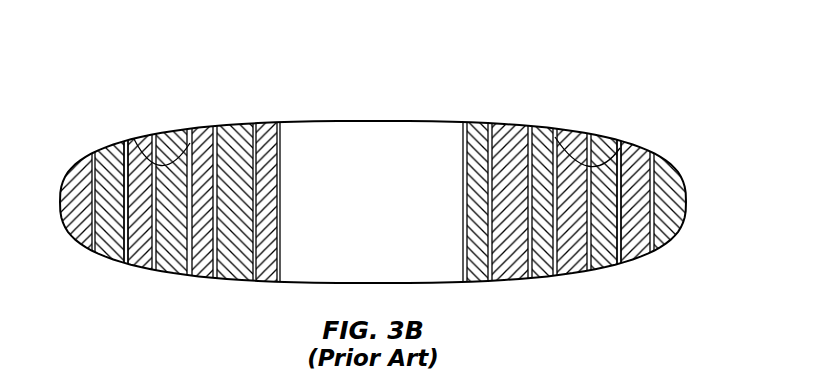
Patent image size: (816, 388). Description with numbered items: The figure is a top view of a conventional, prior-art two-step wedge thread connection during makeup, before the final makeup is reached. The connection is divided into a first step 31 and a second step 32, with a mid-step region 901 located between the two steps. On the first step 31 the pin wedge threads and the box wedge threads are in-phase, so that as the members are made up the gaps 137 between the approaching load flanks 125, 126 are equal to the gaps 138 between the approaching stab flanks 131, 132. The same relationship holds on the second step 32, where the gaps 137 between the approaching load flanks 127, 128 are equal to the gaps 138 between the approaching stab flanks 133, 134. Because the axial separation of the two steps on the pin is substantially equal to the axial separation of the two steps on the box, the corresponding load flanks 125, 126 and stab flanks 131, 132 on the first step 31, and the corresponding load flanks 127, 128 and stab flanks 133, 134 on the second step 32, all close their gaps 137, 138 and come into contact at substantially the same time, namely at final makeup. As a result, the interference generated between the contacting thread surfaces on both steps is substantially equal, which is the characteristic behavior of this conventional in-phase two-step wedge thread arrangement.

The first step 31 is at (168, 165).
The second step 32 is at (577, 165).
The mid-step region 901 is at (293, 109).
The load flank 125 is at (118, 145).
The load flank 126 is at (123, 167).
The load flank 127 is at (553, 137).
The load flank 128 is at (593, 145).
The stab flank 131 is at (202, 195).
The stab flank 132 is at (145, 142).
The stab flank 133 is at (626, 145).
The stab flank 134 is at (659, 200).
The gap between approaching load flanks 137 is at (122, 274).
The gap between approaching stab flanks 138 is at (154, 282).